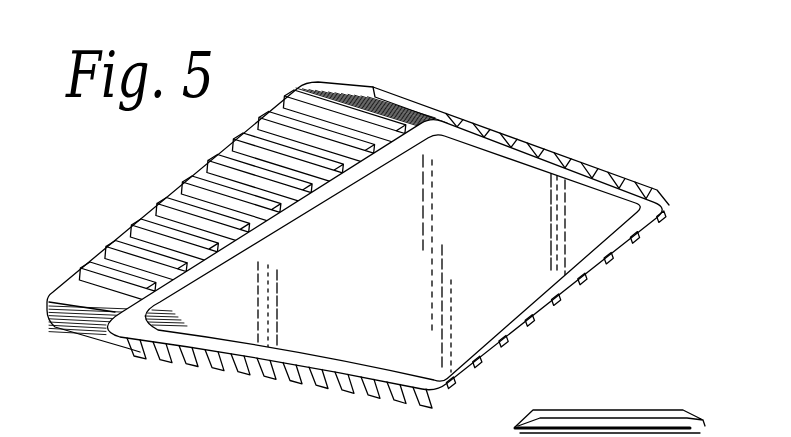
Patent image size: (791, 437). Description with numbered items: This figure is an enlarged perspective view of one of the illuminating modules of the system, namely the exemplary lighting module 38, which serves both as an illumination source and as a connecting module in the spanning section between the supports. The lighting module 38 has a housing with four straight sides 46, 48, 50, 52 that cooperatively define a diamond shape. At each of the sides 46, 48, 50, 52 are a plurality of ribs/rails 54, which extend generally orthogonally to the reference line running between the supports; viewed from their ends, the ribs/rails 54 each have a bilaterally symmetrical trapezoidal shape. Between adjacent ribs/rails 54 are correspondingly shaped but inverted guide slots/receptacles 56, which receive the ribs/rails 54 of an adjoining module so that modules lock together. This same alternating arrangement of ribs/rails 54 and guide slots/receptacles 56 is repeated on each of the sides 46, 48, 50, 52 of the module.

The lighting module 38 is at (500, 177).
The side 46 is at (187, 294).
The side 48 is at (190, 365).
The side 50 is at (583, 287).
The side 52 is at (617, 173).
The ribs/rails 54 is at (290, 97).
The guide slots/receptacles 56 is at (205, 172).